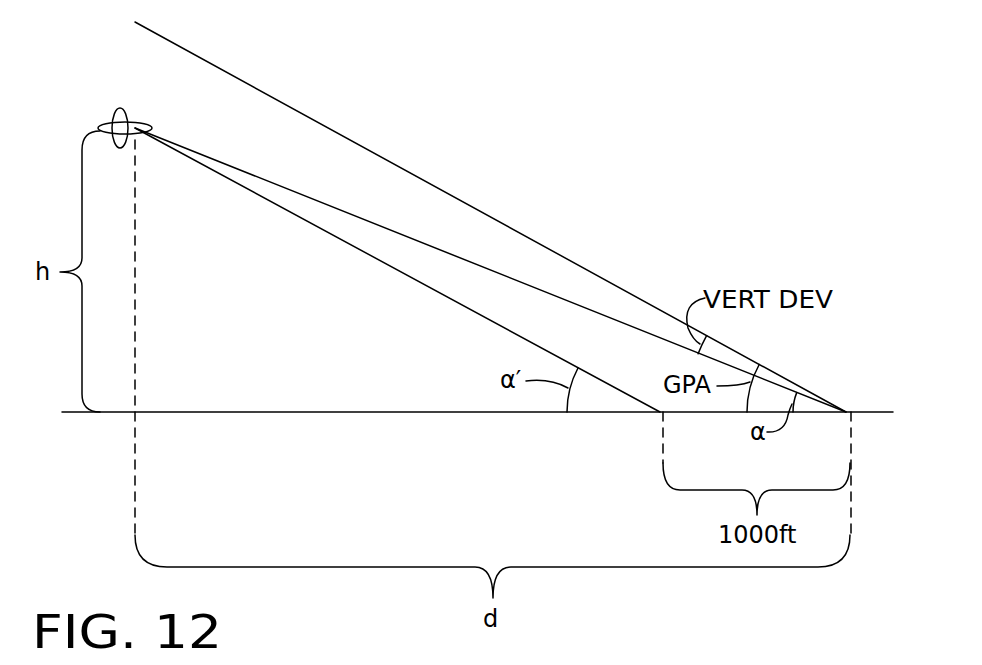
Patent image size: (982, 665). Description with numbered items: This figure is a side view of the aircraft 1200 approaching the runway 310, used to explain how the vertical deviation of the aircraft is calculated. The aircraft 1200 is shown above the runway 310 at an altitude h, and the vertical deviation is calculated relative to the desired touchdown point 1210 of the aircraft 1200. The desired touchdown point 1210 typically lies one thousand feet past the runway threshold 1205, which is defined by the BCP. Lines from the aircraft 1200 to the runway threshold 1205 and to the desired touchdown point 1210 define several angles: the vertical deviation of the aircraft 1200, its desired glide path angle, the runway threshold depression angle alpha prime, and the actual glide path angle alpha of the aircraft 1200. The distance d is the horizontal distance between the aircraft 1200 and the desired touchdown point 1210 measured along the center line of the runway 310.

The aircraft 1200 is at (102, 124).
The runway threshold 1205 is at (657, 414).
The desired touchdown point 1210 is at (853, 412).
The runway 310 is at (875, 412).